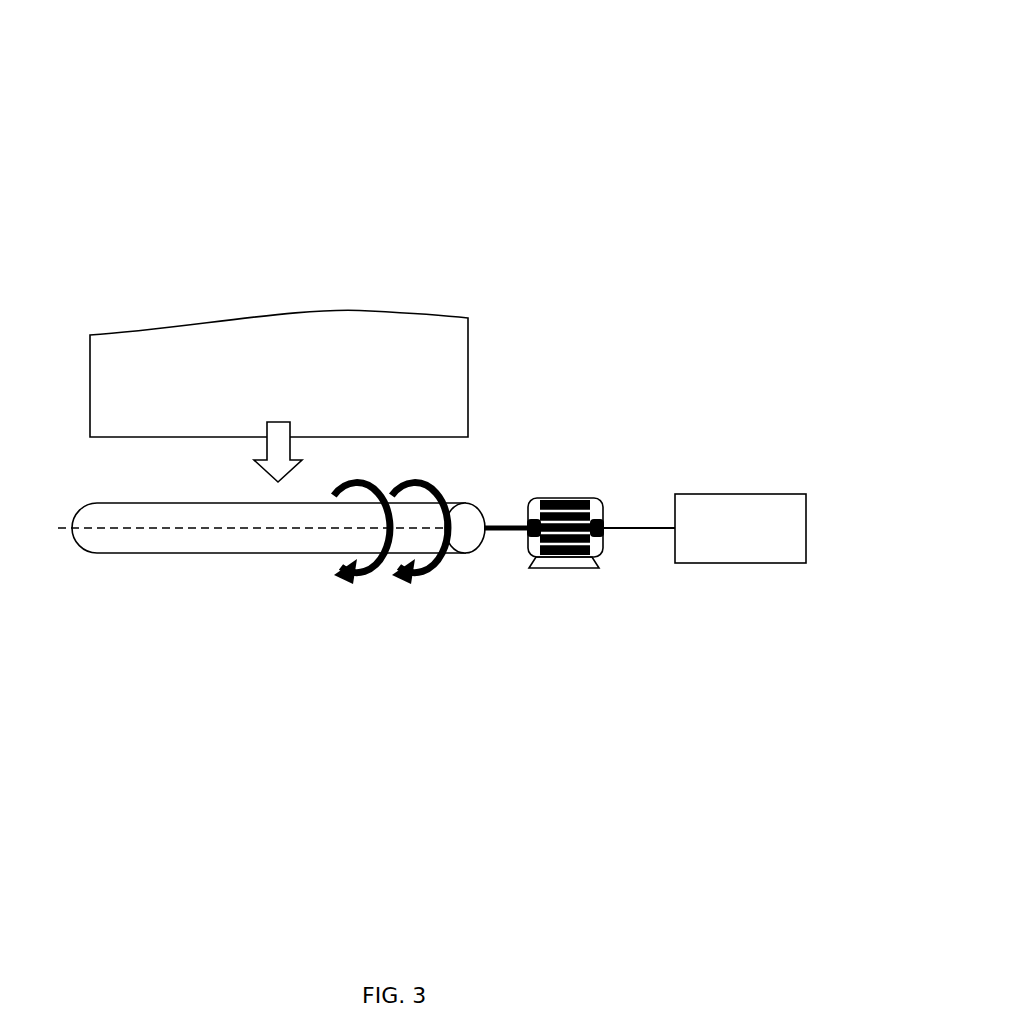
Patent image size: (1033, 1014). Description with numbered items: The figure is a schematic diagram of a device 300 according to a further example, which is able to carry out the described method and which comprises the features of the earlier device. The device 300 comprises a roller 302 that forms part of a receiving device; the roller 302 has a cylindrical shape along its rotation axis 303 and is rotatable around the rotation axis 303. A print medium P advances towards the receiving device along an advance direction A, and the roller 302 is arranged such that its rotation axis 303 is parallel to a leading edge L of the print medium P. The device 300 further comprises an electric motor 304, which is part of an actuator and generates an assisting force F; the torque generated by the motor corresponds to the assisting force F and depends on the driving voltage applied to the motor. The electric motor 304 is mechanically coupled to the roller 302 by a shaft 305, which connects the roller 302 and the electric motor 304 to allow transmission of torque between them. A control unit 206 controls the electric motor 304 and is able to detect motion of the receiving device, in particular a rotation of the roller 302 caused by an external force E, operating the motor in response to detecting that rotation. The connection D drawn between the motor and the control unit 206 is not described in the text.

The device 300 is at (646, 120).
The roller 302 is at (305, 548).
The rotation axis 303 is at (165, 530).
The electric motor 304 is at (575, 498).
The shaft 305 is at (500, 532).
The control unit 206 is at (757, 505).
The print medium P is at (300, 327).
The advance direction A is at (275, 450).
The leading edge L is at (106, 445).
The external force E is at (375, 578).
The assisting force F is at (440, 492).
The drive connection D is at (648, 527).